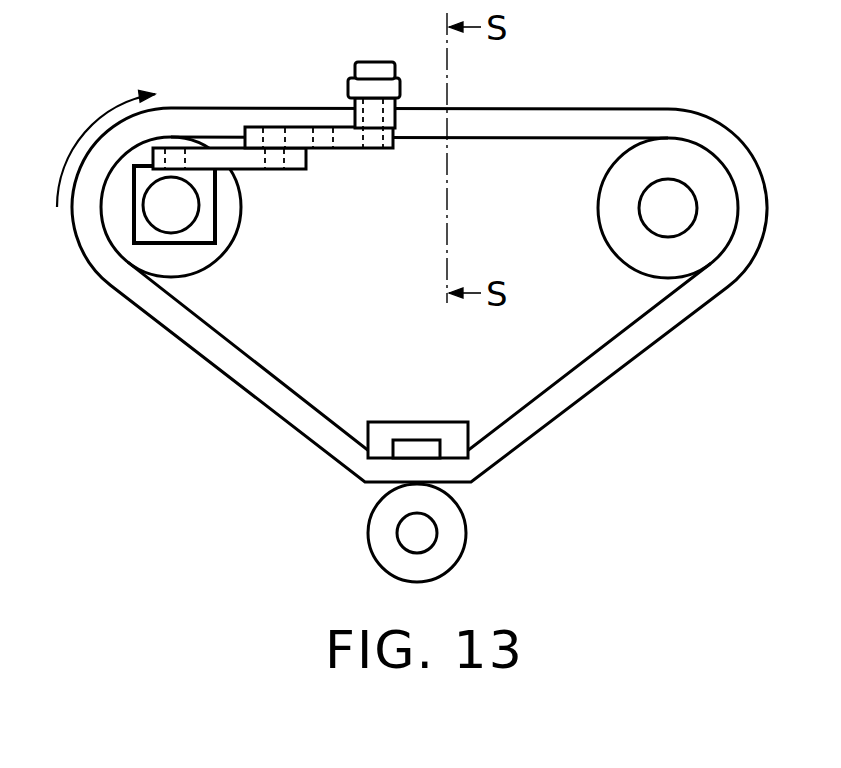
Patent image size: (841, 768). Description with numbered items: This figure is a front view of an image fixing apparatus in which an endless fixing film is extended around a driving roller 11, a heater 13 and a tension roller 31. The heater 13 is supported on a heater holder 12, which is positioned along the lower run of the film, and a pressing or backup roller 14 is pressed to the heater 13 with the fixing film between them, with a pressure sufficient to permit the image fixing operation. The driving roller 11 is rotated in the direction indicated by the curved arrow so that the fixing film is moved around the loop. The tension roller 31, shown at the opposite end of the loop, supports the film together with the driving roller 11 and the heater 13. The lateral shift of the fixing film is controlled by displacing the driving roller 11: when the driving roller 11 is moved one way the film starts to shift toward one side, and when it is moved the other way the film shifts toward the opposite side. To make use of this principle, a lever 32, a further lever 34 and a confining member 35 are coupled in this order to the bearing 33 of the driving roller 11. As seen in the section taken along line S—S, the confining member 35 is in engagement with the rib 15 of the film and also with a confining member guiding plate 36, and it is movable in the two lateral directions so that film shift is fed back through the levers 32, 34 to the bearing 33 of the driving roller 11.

The driving roller 11 is at (208, 254).
The heater holder 12 is at (422, 428).
The heater 13 is at (430, 446).
The pressing or backup roller 14 is at (453, 540).
The rib 15 is at (643, 343).
The tension roller 31 is at (710, 257).
The lever 32 is at (229, 157).
The bearing 33 is at (138, 242).
The lever 34 is at (300, 136).
The confining member 35 is at (358, 117).
The confining member guiding plate 36 is at (390, 88).